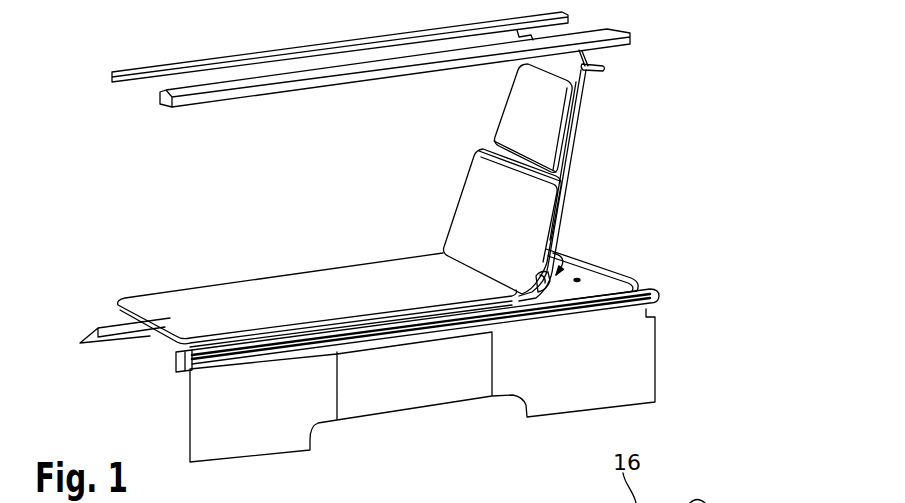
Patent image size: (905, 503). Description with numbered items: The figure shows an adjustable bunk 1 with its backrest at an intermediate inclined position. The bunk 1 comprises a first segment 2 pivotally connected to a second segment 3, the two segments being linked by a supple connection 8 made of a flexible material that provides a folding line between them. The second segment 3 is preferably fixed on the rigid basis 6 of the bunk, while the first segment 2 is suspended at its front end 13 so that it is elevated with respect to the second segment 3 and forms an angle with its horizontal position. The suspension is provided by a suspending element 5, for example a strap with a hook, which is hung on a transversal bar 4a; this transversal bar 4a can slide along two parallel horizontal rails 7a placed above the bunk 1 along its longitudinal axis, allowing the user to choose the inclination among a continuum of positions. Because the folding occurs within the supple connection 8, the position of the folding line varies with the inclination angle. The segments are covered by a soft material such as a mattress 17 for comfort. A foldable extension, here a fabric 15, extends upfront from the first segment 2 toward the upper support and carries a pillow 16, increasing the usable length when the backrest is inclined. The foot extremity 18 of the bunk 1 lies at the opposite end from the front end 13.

The bunk 1 is at (690, 331).
The first segment 2 is at (515, 217).
The second segment 3 is at (252, 319).
The transversal bar 4a is at (608, 60).
The suspending element 5 is at (593, 96).
The basis 6 is at (558, 302).
The rail 7a is at (241, 52).
The supple connection 8 is at (507, 278).
The front end 13 is at (508, 168).
The fabric 15 is at (582, 130).
The pillow 16 is at (562, 148).
The mattress 17 is at (376, 323).
The foot extremity 18 is at (146, 338).